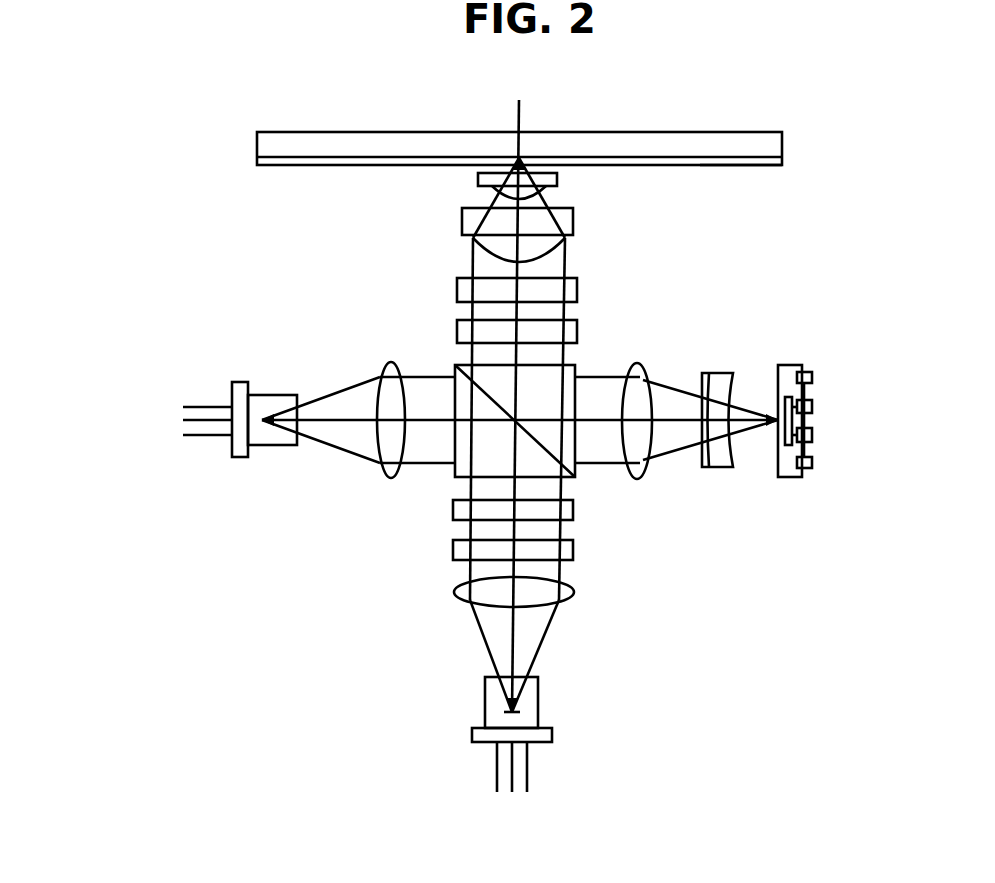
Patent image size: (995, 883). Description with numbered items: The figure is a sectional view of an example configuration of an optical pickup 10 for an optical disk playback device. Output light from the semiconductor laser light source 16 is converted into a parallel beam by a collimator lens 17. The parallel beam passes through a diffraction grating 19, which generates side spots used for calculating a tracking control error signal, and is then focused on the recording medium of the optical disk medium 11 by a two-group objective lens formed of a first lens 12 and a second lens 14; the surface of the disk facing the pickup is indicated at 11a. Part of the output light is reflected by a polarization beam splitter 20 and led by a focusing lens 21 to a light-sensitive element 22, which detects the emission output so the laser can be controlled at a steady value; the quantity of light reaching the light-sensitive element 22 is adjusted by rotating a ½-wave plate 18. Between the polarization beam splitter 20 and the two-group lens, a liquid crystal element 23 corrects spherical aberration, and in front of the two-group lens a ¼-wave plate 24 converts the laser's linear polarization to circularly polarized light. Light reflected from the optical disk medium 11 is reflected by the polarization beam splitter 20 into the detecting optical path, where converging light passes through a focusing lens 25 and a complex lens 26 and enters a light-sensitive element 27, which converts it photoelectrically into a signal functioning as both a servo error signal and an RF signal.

The optical pickup 10 is at (370, 588).
The optical disk medium 11 is at (278, 132).
The recording surface of optical disc 11a is at (765, 167).
The first lens 12 is at (546, 187).
The second lens 14 is at (565, 228).
The semiconductor laser light source 16 is at (539, 716).
The collimator lens 17 is at (574, 591).
The ½-wave plate 18 is at (453, 557).
The diffraction grating 19 is at (453, 517).
The polarization beam splitter 20 is at (570, 445).
The focusing lens 21 is at (391, 362).
The light-sensitive element 22 is at (267, 445).
The liquid crystal element 23 is at (577, 338).
The ¼-wave plate 24 is at (577, 298).
The focusing lens 25 is at (645, 447).
The complex lens 26 is at (725, 463).
The light-sensitive element 27 is at (787, 477).